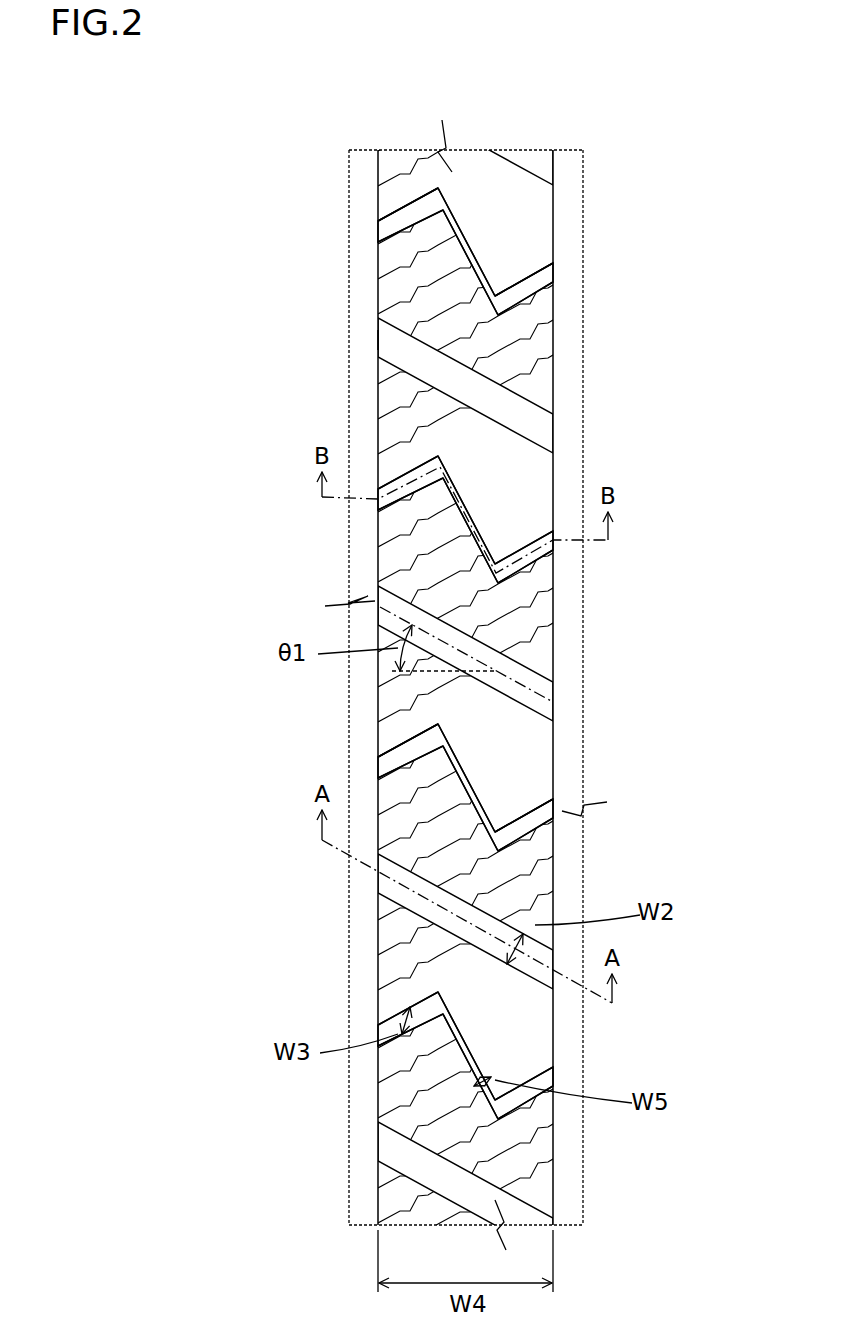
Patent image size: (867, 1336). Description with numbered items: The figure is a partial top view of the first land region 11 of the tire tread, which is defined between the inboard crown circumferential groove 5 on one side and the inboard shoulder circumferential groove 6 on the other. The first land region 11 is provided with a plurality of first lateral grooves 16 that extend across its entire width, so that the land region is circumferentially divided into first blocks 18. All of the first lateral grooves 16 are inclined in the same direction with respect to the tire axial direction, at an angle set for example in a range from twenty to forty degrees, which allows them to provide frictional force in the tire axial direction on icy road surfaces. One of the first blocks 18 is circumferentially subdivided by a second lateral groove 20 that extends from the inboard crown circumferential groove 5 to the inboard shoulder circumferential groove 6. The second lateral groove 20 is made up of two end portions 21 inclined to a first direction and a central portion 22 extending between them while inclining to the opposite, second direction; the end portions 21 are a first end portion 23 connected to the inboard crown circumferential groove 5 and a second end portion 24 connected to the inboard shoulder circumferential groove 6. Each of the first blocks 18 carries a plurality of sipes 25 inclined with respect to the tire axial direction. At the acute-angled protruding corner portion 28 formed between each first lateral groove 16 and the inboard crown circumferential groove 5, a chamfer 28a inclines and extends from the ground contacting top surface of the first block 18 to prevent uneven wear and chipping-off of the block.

The inboard crown circumferential groove 5 is at (364, 185).
The inboard shoulder circumferential groove 6 is at (568, 205).
The first land region 11 is at (483, 182).
The first lateral groove 16 is at (423, 362).
The first block 18 is at (503, 233).
The second lateral groove 20 is at (718, 262).
The end portion 21 is at (660, 322).
The central portion 22 is at (475, 252).
The first end portion 23 is at (404, 218).
The second end portion 24 is at (524, 291).
The sipe 25 is at (485, 641).
The acute-angled protruding corner portion 28 is at (392, 387).
The chamfer 28a is at (377, 338).